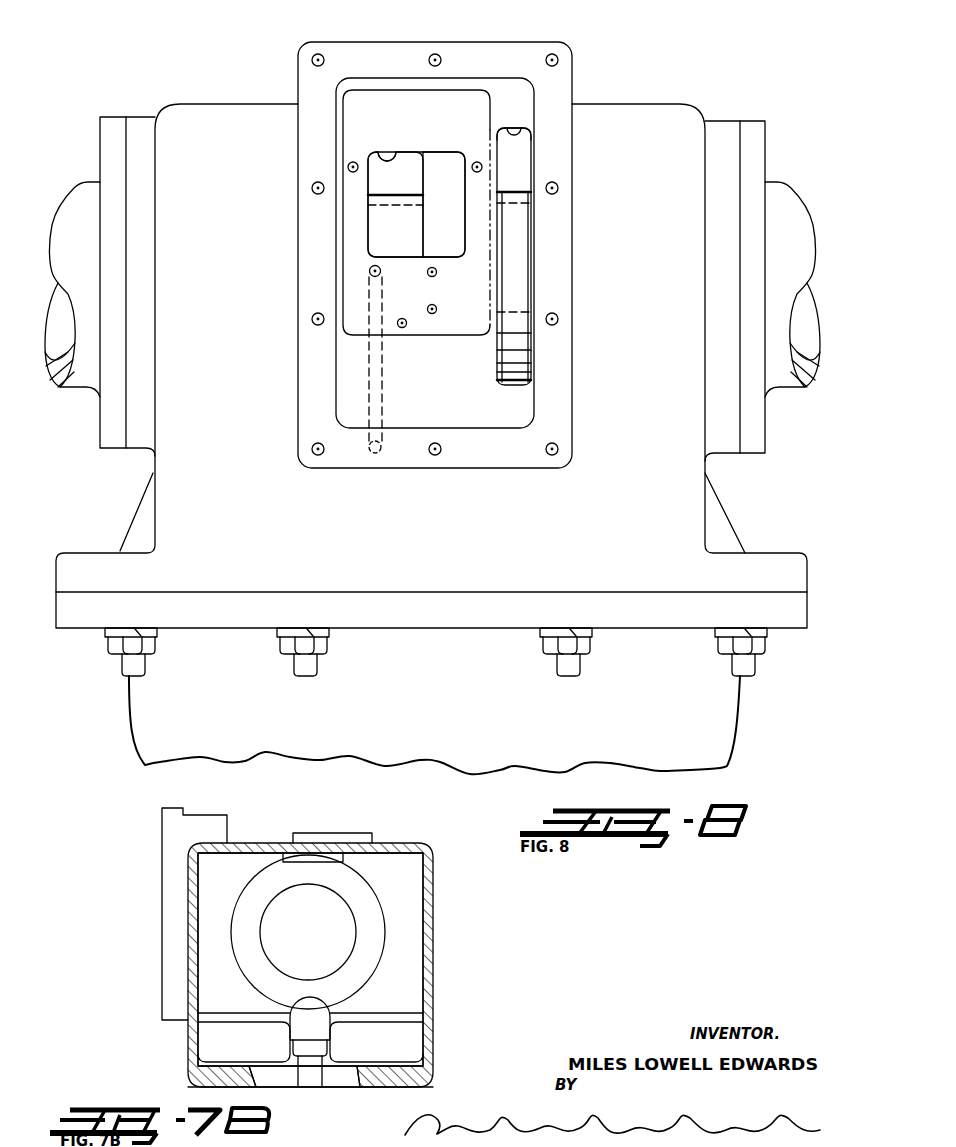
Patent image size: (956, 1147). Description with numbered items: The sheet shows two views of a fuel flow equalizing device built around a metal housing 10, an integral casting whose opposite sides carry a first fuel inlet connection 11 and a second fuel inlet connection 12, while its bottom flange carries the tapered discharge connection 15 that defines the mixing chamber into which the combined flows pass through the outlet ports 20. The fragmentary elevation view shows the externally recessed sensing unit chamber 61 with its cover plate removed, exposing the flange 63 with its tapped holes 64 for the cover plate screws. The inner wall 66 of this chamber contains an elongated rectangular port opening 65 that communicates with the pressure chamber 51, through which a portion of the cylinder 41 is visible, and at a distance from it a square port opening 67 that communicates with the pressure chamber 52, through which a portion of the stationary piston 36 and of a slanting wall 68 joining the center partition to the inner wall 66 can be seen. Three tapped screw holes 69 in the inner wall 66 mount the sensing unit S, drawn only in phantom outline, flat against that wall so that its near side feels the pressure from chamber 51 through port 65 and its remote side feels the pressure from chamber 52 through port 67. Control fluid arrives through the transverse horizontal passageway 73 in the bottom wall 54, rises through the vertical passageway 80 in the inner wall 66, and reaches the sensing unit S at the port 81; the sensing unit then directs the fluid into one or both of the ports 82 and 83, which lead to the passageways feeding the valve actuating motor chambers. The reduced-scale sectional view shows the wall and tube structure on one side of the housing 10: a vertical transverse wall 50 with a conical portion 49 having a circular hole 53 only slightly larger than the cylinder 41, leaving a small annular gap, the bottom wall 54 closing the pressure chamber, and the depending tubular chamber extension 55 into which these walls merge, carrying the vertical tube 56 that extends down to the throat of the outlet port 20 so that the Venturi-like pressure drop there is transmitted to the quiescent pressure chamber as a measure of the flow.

In FIG. 8, the housing 10 is at (627, 112).
In FIG. 7B, the housing 10 is at (428, 922).
In FIG. 8, the first fuel inlet connection 11 is at (785, 190).
In FIG. 8, the second fuel inlet connection 12 is at (82, 188).
In FIG. 8, the discharge connection 15 is at (730, 703).
In FIG. 7B, the outlet ports 20 is at (345, 1078).
In FIG. 8, the piston element 36 is at (410, 232).
In FIG. 8, the cylinder 41 is at (523, 229).
In FIG. 7B, the conical portion 49 is at (358, 888).
In FIG. 7B, the transverse wall 50 is at (405, 870).
In FIG. 8, the pressure chamber 51 is at (523, 156).
In FIG. 8, the pressure chamber 52 is at (410, 167).
In FIG. 7B, the circular hole 53 is at (290, 923).
In FIG. 7B, the bottom wall 54 is at (266, 1017).
In FIG. 7B, the tubular chamber extension 55 is at (318, 1030).
In FIG. 7B, the vertical tube 56 is at (312, 1077).
In FIG. 8, the sensing unit chamber 61 is at (408, 401).
In FIG. 8, the flange 63 is at (500, 48).
In FIG. 8, the tapped holes 64 is at (556, 57).
In FIG. 8, the rectangular port opening 65 is at (523, 130).
In FIG. 8, the inner wall 66 is at (465, 418).
In FIG. 8, the square port opening 67 is at (404, 156).
In FIG. 8, the slanting wall 68 is at (437, 165).
In FIG. 8, the tapped screw holes 69 is at (349, 172).
In FIG. 8, the transverse horizontal passageway 73 is at (368, 455).
In FIG. 8, the vertical passageway 80 is at (378, 420).
In FIG. 8, the port 81 is at (369, 269).
In FIG. 8, the port 82 is at (438, 310).
In FIG. 8, the port 83 is at (438, 272).
In FIG. 8, the sensing unit S is at (457, 336).